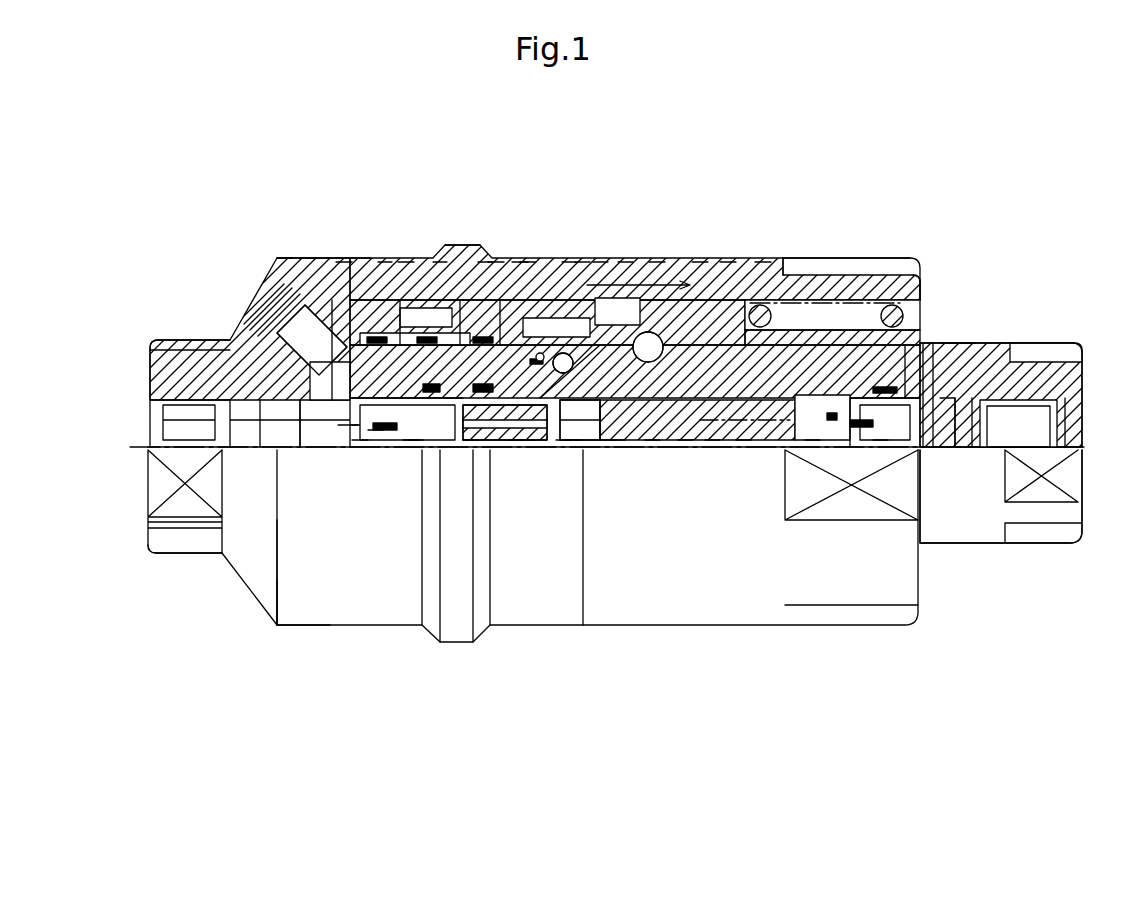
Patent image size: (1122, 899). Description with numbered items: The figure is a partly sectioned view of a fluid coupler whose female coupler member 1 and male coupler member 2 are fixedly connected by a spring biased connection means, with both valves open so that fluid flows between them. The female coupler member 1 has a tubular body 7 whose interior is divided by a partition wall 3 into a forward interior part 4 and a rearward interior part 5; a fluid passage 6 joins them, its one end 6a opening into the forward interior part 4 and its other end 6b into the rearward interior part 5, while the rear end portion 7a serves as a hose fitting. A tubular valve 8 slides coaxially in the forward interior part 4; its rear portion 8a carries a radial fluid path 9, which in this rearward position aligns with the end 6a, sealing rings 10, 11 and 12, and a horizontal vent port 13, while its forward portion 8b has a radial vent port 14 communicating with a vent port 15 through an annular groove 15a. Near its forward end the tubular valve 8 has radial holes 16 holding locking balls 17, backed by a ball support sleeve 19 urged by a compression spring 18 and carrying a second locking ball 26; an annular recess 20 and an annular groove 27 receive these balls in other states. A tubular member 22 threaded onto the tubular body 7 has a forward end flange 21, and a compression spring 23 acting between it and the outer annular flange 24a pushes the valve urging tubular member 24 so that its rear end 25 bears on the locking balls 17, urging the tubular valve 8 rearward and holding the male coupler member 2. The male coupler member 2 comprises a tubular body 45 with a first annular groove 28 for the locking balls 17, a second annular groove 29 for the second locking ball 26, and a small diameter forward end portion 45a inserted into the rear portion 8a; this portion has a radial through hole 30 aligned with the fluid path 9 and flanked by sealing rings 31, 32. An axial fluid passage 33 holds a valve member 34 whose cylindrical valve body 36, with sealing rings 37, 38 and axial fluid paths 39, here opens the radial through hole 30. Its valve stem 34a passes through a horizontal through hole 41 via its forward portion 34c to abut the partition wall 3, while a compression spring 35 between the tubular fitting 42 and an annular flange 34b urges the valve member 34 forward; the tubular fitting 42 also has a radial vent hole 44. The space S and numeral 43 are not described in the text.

The female coupler member 1 is at (284, 257).
The male coupler member 2 is at (962, 552).
The partition wall 3 is at (277, 600).
The forward interior part 4 is at (318, 450).
The space S is at (350, 450).
The rearward interior part 5 is at (275, 451).
The fluid passage 6 is at (308, 262).
The end of fluid passage 6a is at (468, 262).
The other end of fluid passage 6b is at (300, 432).
The tubular body 7 is at (292, 262).
The rear end portion 7a is at (150, 350).
The tubular valve 8 is at (347, 450).
The rear portion of tubular valve 8a is at (344, 262).
The forward portion of tubular valve 8b is at (657, 262).
The fluid path 9 is at (485, 262).
The sealing ring 10 is at (496, 262).
The sealing ring 11 is at (440, 262).
The sealing ring 12 is at (358, 262).
The horizontal vent port 13 is at (385, 262).
The radial vent port 14 is at (528, 262).
The vent port 15 is at (569, 262).
The annular groove 15a is at (582, 262).
The radial holes 16 is at (700, 262).
The locking balls 17 is at (667, 262).
The compression spring 18 is at (553, 262).
The ball support sleeve 19 is at (608, 450).
The annular recess 20 is at (728, 262).
The forward end flange 21 is at (930, 303).
The tubular member 22 is at (825, 262).
The compression spring 23 is at (920, 275).
The valve urging tubular member 24 is at (858, 278).
The outer annular flange 24a is at (763, 262).
The rear end 25 is at (685, 450).
The second locking ball 26 is at (600, 262).
The annular groove 27 is at (625, 262).
The first annular groove 28 is at (652, 450).
The second annular groove 29 is at (563, 450).
The radial through hole 30 is at (415, 450).
The sealing ring 31 is at (520, 262).
The sealing ring 32 is at (406, 262).
The fluid passage 33 is at (618, 450).
The valve member 34 is at (543, 450).
The valve stem 34a is at (743, 450).
The annular flange 34b is at (573, 450).
The forward portion of valve stem 34c is at (360, 450).
The compression spring 35 is at (813, 450).
The cylindrical valve body 36 is at (475, 560).
The sealing ring 37 is at (527, 450).
The sealing ring 38 is at (470, 450).
The axial fluid paths 39 is at (516, 450).
The horizontal through hole 41 is at (375, 450).
The tubular fitting 42 is at (1010, 343).
The seal 43 is at (880, 450).
The radial vent hole 44 is at (957, 336).
The tubular body 45 is at (712, 450).
The small diameter forward end portion 45a is at (410, 450).